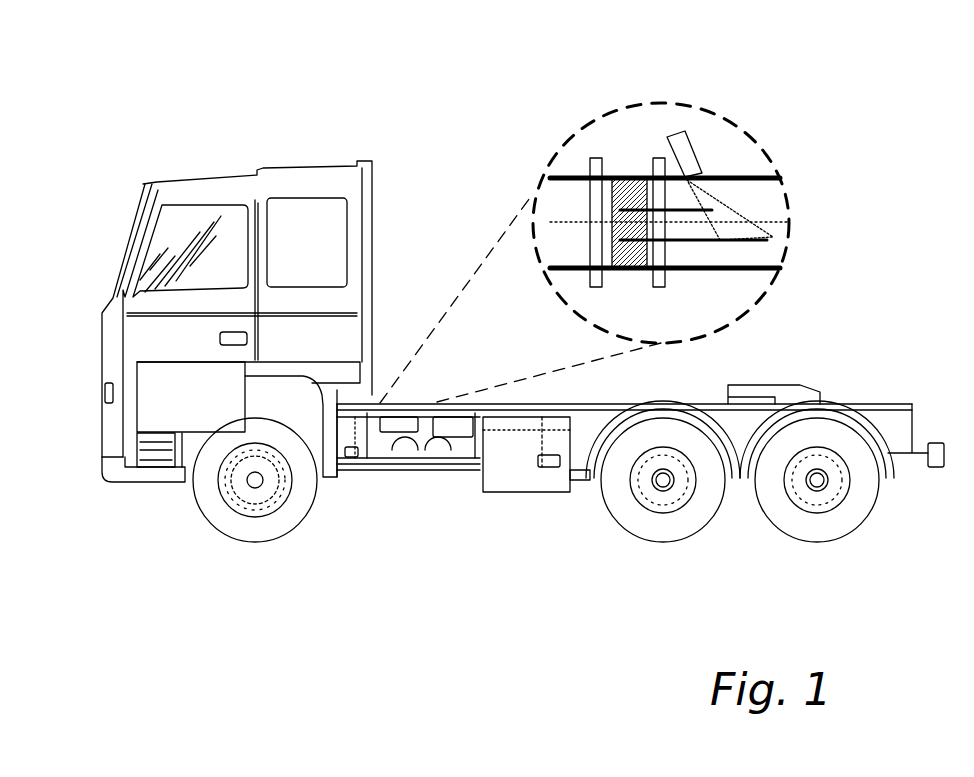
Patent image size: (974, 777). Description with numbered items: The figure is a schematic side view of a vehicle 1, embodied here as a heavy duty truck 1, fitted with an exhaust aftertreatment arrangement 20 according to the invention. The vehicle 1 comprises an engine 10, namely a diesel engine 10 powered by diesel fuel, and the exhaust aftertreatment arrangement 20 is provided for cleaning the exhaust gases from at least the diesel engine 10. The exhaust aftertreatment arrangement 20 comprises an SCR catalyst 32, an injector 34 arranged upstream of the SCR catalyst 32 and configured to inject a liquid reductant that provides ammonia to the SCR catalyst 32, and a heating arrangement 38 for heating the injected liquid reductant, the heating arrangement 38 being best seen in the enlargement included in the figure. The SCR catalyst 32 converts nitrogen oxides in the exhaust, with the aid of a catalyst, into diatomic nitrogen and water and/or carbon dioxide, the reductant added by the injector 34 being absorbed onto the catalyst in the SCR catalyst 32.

The vehicle 1 is at (203, 104).
The engine 10 is at (150, 437).
The exhaust aftertreatment arrangement 20 is at (416, 326).
The SCR catalyst 32 is at (457, 437).
The injector 34 is at (675, 137).
The heating arrangement 38 is at (393, 440).